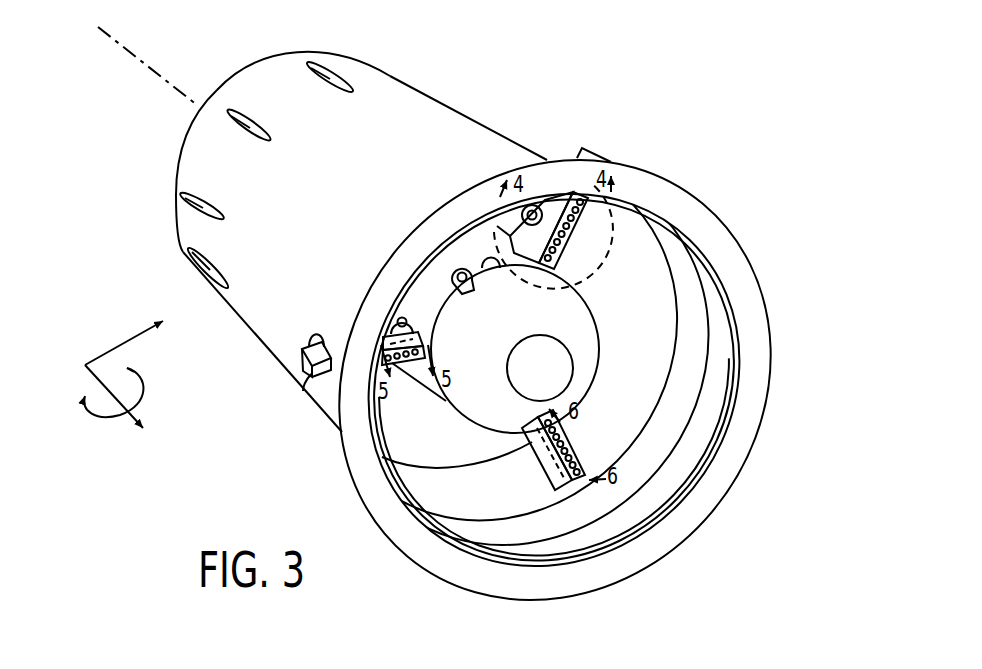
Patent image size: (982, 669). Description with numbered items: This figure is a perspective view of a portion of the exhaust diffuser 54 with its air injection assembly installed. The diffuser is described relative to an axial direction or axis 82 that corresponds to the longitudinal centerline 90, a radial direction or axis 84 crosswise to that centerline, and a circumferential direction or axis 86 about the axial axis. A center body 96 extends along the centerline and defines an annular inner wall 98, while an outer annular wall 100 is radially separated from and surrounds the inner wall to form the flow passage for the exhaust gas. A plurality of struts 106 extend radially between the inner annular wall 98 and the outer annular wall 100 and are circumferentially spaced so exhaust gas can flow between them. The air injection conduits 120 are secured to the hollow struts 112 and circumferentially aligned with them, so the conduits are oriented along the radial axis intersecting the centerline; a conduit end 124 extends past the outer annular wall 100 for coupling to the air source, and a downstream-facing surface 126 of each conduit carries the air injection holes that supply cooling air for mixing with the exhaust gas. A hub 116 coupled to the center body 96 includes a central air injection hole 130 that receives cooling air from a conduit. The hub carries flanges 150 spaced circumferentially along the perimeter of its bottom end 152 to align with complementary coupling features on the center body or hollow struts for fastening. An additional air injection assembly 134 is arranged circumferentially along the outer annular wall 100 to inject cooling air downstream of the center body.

The exhaust diffuser 54 is at (398, 78).
The axial direction or axis 82 is at (137, 407).
The radial direction or axis 84 is at (122, 340).
The circumferential direction or axis 86 is at (97, 423).
The longitudinal centerline 90 is at (147, 70).
The center body 96 is at (458, 250).
The annular inner wall 98 is at (430, 384).
The outer annular wall 100 is at (307, 117).
The struts 106 is at (231, 114).
The hollow struts 112 is at (310, 338).
The hub 116 is at (563, 302).
The air injection conduits 120 is at (612, 215).
The conduit end 124 is at (305, 392).
The downstream-facing surface 126 is at (590, 483).
The central air injection hole 130 is at (552, 364).
The additional air injection assembly 134 is at (692, 477).
The flanges 150 is at (537, 205).
The bottom end 152 is at (498, 272).